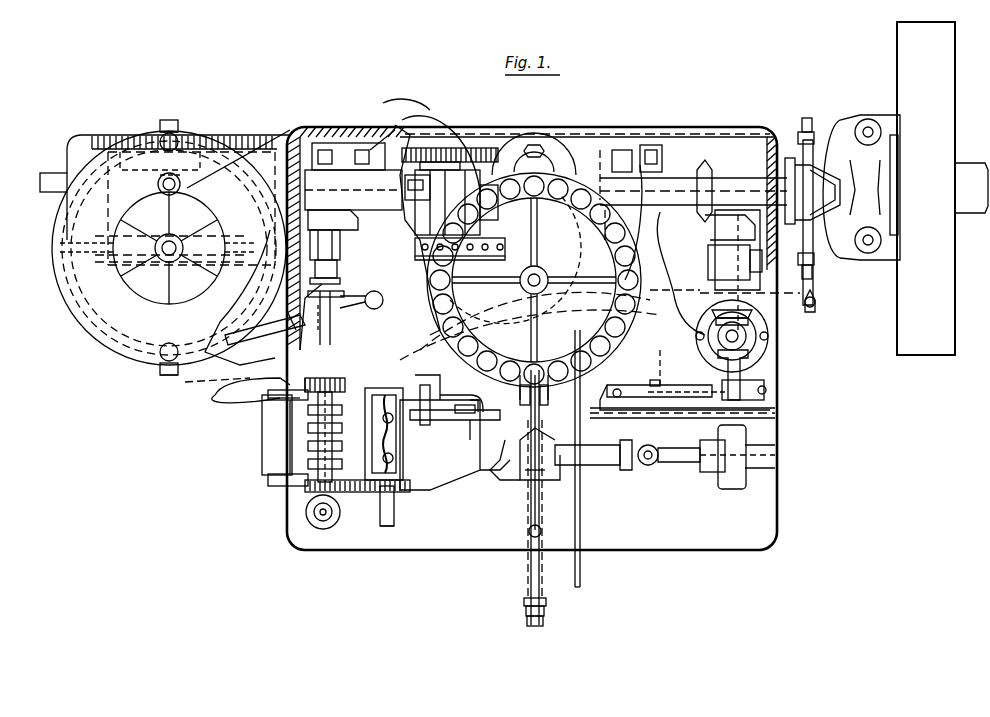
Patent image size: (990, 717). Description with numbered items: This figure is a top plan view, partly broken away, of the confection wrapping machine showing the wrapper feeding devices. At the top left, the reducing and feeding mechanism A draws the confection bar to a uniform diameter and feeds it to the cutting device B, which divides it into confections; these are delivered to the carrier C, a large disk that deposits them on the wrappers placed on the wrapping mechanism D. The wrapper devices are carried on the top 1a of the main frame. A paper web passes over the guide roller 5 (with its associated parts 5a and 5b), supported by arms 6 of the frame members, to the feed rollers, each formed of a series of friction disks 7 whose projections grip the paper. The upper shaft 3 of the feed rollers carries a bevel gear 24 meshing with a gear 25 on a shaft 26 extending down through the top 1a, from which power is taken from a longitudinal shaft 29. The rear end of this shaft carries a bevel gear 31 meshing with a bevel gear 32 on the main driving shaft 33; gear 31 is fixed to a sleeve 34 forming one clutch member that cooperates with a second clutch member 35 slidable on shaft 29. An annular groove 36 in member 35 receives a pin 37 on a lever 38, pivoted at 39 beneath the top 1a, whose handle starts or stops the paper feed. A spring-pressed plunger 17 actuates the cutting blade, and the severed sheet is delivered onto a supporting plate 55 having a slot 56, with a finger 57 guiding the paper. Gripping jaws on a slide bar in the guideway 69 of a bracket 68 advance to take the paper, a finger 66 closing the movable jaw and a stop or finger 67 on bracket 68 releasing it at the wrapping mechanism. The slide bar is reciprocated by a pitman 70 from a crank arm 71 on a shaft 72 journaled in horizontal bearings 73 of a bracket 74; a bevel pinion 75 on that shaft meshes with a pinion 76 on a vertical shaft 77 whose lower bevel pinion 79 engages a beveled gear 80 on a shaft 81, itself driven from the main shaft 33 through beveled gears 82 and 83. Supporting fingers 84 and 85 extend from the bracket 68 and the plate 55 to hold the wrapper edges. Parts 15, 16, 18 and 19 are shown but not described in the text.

The top of the main frame 1a is at (768, 516).
The reducing and feeding mechanism A is at (370, 150).
The cutting device B is at (425, 120).
The carrier C is at (605, 235).
The wrapping mechanism D is at (505, 480).
The upper shaft 3 is at (310, 420).
The guide roller 5 is at (870, 285).
The guide 5a is at (229, 385).
The guide plate 5b is at (262, 432).
The arms 6 is at (268, 398).
The friction disks 7 is at (350, 425).
The bracket 15 is at (805, 262).
The shaft 16 is at (394, 504).
The spring-pressed plunger 17 is at (661, 290).
The lever 18 is at (213, 395).
The shaft end 19 is at (392, 526).
The bevel gear 24 is at (310, 495).
The gear 25 is at (316, 522).
The shaft 26 is at (332, 513).
The shaft 29 is at (332, 310).
The bevel gear 31 is at (345, 218).
The bevel gear 32 is at (307, 187).
The main driving shaft 33 is at (735, 182).
The sleeve 34 is at (338, 262).
The clutch member 35 is at (338, 283).
The annular groove 36 is at (345, 285).
The pin 37 is at (300, 295).
The lever 38 is at (268, 328).
The pivot 39 is at (380, 307).
The supporting plate 55 is at (455, 455).
The slot 56 is at (475, 408).
The finger 57 is at (445, 420).
The finger 66 is at (443, 395).
The stop or finger 67 is at (612, 390).
The bracket 68 is at (660, 385).
The guideway 69 is at (777, 413).
The pitman 70 is at (682, 390).
The crank arm 71 is at (765, 388).
The shaft 72 is at (780, 336).
The horizontal bearings 73 is at (745, 365).
The bracket 74 is at (700, 340).
The bevel pinion 75 is at (775, 348).
The pinion 76 is at (710, 330).
The vertical shaft 77 is at (760, 325).
The bevel pinion 79 is at (760, 318).
The beveled gear 80 is at (795, 305).
The shaft 81 is at (795, 300).
The beveled gear 82 is at (700, 220).
The beveled gear 83 is at (703, 162).
The supporting finger 84 is at (590, 418).
The supporting finger 85 is at (485, 422).